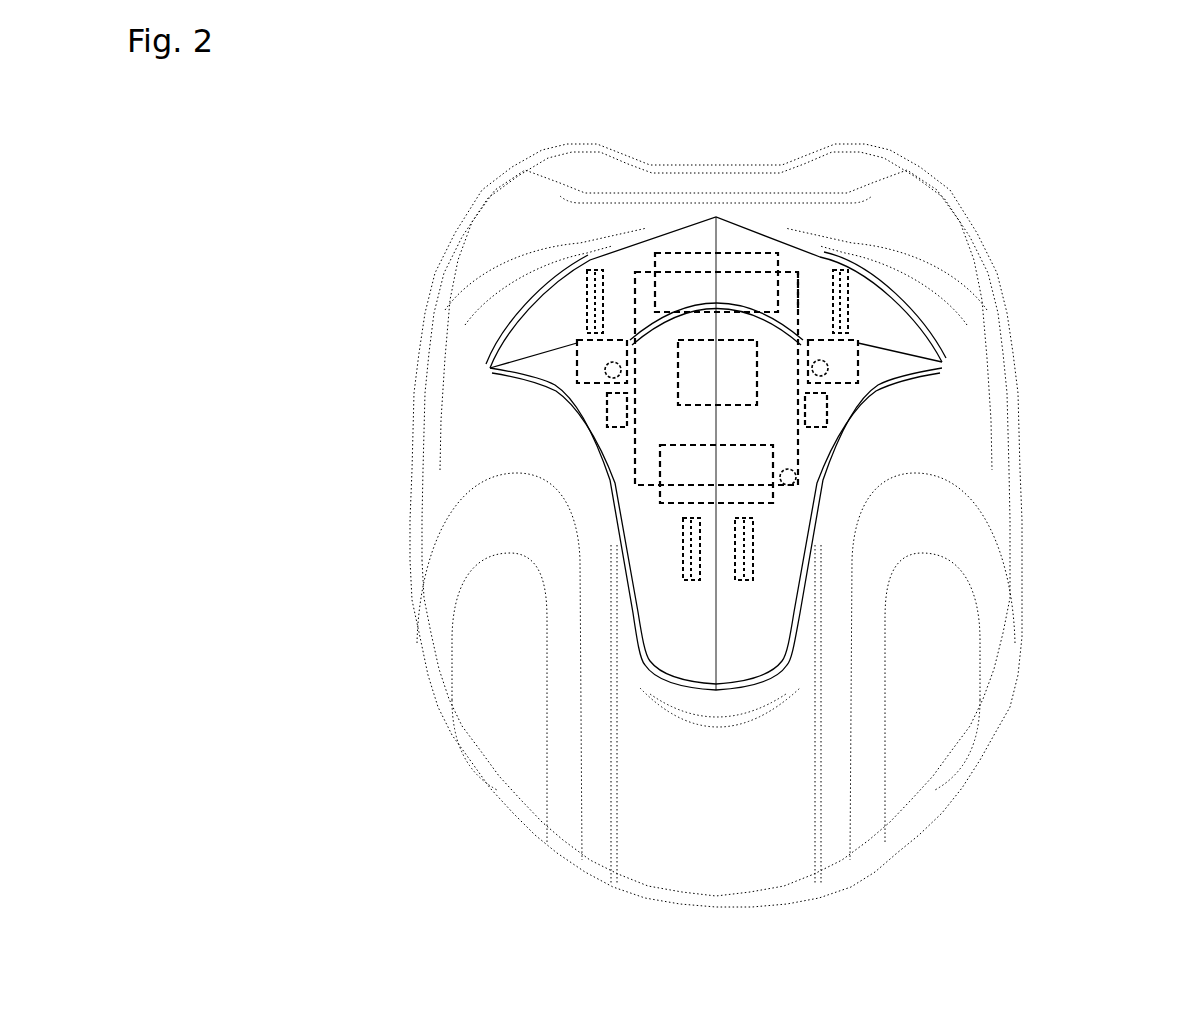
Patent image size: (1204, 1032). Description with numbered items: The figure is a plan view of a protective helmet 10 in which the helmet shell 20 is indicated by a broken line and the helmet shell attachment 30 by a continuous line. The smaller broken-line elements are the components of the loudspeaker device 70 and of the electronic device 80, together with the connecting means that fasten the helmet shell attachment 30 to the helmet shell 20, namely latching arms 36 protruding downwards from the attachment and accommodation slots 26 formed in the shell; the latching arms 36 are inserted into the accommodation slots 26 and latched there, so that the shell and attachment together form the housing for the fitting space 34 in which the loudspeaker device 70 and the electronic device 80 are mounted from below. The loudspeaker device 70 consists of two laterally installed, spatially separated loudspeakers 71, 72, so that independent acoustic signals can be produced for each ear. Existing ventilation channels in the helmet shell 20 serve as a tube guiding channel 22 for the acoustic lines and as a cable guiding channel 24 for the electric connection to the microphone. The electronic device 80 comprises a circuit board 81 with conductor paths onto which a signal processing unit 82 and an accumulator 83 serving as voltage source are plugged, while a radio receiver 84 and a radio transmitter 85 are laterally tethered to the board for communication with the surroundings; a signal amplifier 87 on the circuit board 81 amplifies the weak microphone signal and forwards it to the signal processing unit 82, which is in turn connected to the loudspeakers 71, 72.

The protective helmet 10 is at (398, 142).
The helmet shell 20 is at (470, 242).
The tube guiding channel 22 is at (788, 477).
The cable guiding channel 24 is at (613, 414).
The accommodation slots 26 is at (848, 279).
The helmet shell attachment 30 is at (818, 265).
The fitting space 34 is at (618, 255).
The latching arms 36 is at (845, 289).
The loudspeaker device 70 is at (553, 365).
The loudspeaker 71 is at (845, 369).
The loudspeaker 72 is at (577, 350).
The electronic device 80 is at (668, 232).
The circuit board 81 is at (787, 287).
The signal processing unit 82 is at (727, 407).
The accumulator 83 is at (683, 263).
The radio receiver 84 is at (818, 412).
The radio transmitter 85 is at (610, 375).
The signal amplifier 87 is at (727, 480).